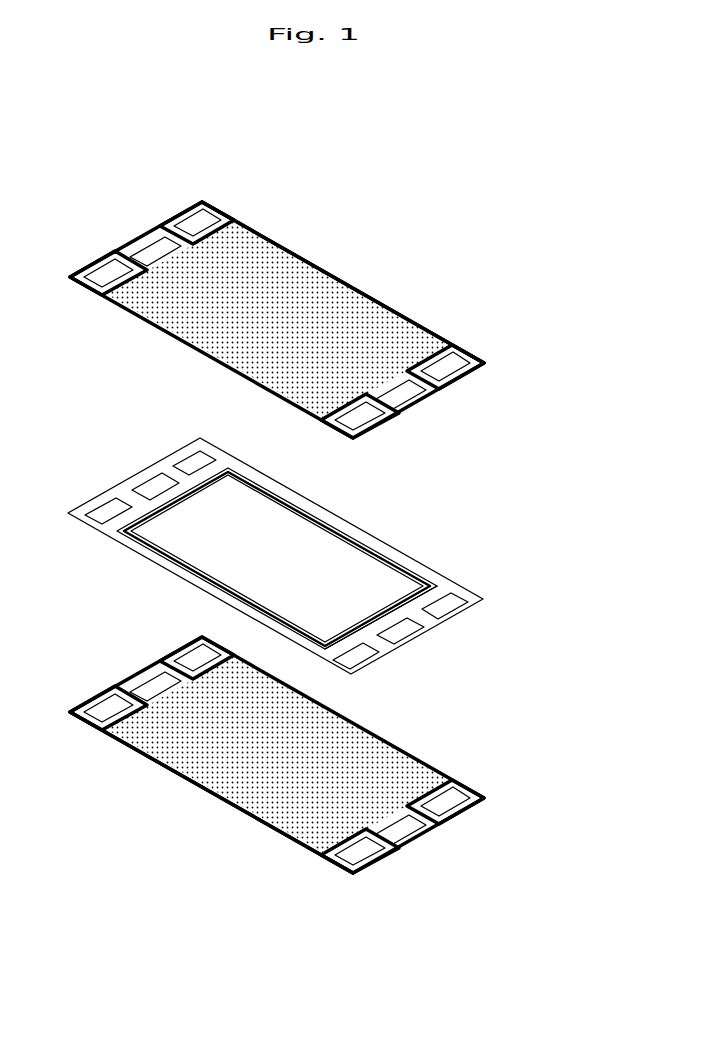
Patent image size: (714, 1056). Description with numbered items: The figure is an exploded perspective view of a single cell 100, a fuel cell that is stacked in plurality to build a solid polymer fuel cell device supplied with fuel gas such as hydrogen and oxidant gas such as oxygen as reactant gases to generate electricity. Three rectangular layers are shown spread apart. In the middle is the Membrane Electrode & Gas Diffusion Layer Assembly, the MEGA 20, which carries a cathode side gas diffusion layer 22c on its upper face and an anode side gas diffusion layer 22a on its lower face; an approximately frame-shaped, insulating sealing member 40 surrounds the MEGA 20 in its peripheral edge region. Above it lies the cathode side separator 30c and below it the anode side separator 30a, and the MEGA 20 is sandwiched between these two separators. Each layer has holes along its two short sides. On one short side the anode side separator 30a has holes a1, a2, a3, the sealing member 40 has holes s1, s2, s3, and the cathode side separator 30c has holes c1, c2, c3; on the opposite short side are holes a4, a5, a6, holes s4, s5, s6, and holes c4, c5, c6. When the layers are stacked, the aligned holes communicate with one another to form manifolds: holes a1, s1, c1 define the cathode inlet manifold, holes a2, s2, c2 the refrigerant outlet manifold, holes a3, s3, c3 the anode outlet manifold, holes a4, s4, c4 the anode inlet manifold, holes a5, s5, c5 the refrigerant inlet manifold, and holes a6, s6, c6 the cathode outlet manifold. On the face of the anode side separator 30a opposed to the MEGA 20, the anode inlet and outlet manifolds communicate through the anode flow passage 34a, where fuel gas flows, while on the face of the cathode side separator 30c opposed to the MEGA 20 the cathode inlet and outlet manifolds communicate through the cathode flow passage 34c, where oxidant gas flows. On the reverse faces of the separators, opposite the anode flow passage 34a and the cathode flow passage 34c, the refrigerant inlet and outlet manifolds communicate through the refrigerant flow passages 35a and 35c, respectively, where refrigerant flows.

The single cell 100 is at (533, 331).
The cathode side separator 30c is at (117, 249).
The cathode flow passage 34c is at (125, 313).
The refrigerant flow passage 35c is at (282, 232).
The hole c1 is at (196, 222).
The hole c2 is at (150, 248).
The hole c3 is at (108, 272).
The hole c4 is at (455, 373).
The hole c5 is at (413, 397).
The hole c6 is at (373, 421).
The sealing member 40 is at (484, 600).
The Membrane Electrode & Gas Diffusion Layer Assembly (MEGA) 20 is at (167, 525).
The cathode side gas diffusion layer 22c is at (150, 507).
The anode side gas diffusion layer 22a is at (350, 603).
The hole s1 is at (195, 462).
The hole s2 is at (143, 487).
The hole s3 is at (108, 510).
The hole s4 is at (451, 603).
The hole s5 is at (411, 630).
The hole s6 is at (362, 658).
The anode side separator 30a is at (114, 684).
The anode flow passage 34a is at (263, 771).
The refrigerant flow passage 35a is at (283, 833).
The hole a1 is at (194, 656).
The hole a2 is at (150, 680).
The hole a3 is at (108, 705).
The hole a4 is at (463, 811).
The hole a5 is at (411, 832).
The hole a6 is at (373, 856).